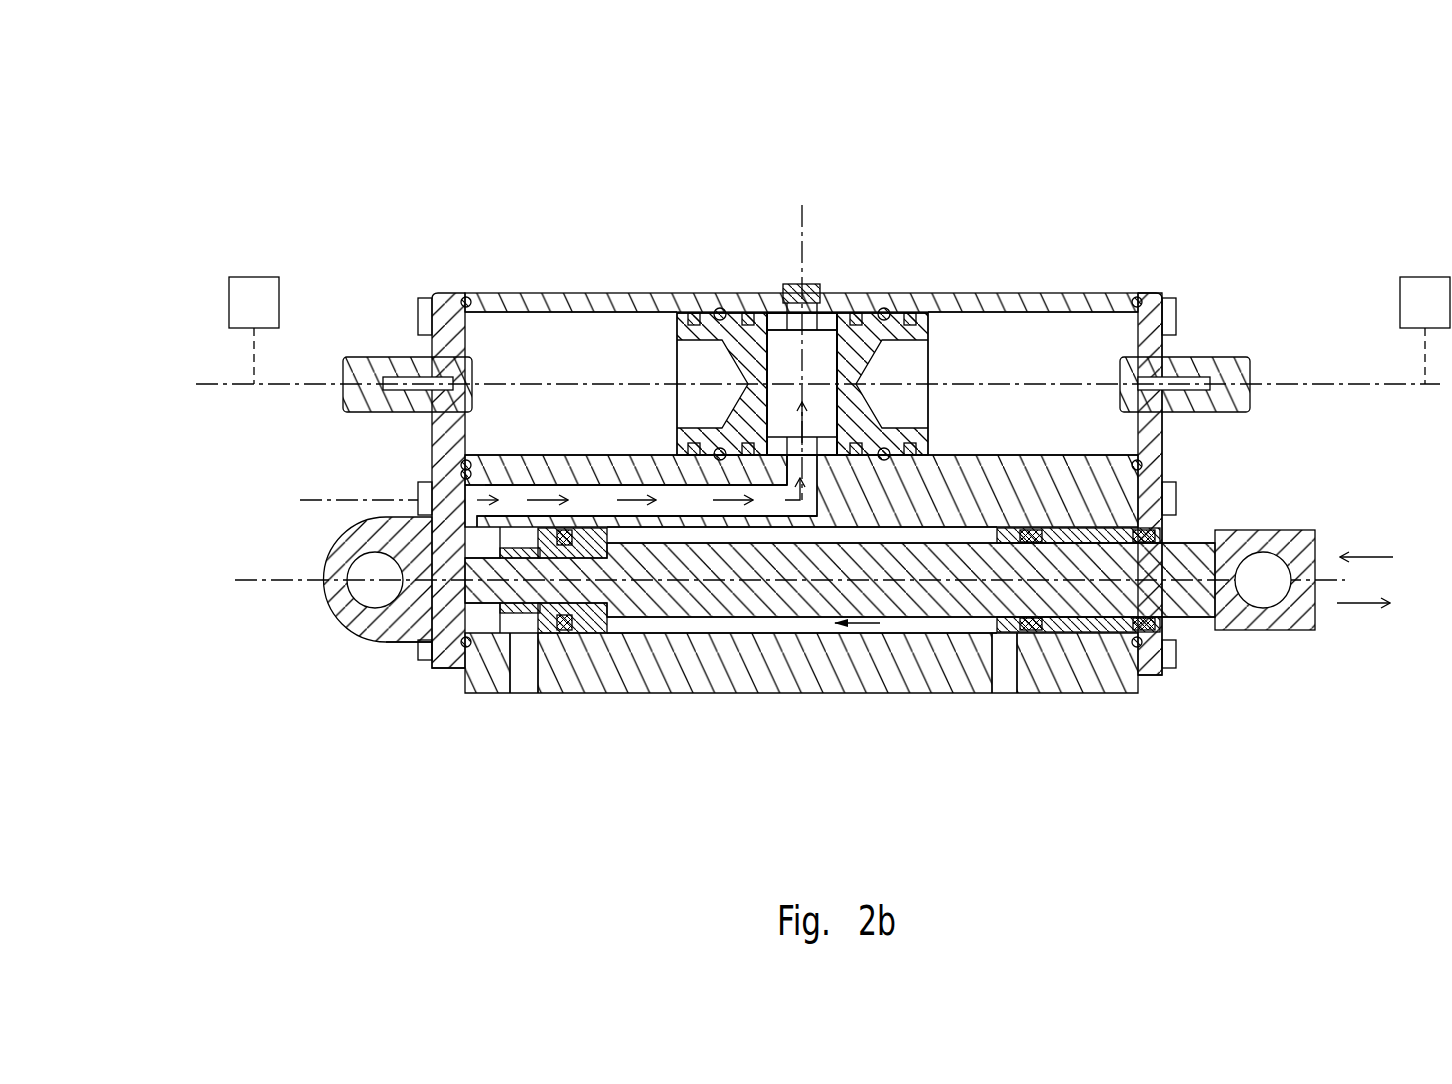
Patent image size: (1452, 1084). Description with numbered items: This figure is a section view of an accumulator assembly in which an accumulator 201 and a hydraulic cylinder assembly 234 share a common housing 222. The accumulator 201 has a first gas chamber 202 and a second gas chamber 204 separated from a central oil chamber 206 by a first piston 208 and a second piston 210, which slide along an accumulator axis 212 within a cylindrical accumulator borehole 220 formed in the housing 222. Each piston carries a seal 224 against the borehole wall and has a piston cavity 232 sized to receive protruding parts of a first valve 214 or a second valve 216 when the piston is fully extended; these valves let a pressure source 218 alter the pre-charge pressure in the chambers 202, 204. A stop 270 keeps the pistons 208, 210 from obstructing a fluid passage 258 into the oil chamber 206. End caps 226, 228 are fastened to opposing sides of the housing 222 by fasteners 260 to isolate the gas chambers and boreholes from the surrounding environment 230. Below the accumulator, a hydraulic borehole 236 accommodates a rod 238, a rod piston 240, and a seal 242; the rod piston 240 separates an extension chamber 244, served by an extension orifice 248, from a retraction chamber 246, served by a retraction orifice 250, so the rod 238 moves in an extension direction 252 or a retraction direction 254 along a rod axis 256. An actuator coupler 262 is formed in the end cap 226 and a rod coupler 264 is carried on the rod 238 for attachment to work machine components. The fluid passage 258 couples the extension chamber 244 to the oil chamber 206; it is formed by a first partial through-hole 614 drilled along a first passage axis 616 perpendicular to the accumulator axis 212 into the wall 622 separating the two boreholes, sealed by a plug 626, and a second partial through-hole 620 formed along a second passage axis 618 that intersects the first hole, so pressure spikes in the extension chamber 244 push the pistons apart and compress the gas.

The accumulator 201 is at (1219, 298).
The first gas chamber 202 is at (595, 362).
The second gas chamber 204 is at (1065, 340).
The oil chamber 206 is at (818, 352).
The first piston 208 is at (718, 312).
The second piston 210 is at (930, 332).
The accumulator axis 212 is at (196, 384).
The first valve 214 is at (355, 357).
The second valve 216 is at (1250, 386).
The pressure source 218 is at (255, 277).
The accumulator borehole 220 is at (503, 352).
The housing 222 is at (648, 680).
The seal 224 is at (884, 312).
The end cap 226 is at (440, 440).
The end cap 228 is at (1161, 333).
The surrounding environment 230 is at (318, 86).
The piston cavity 232 is at (692, 366).
The hydraulic cylinder assembly 234 is at (292, 622).
The hydraulic borehole 236 is at (890, 600).
The rod 238 is at (930, 598).
The rod piston 240 is at (618, 690).
The seal 242 is at (1085, 635).
The extension chamber 244 is at (488, 624).
The retraction chamber 246 is at (780, 626).
The extension orifice 248 is at (525, 700).
The retraction orifice 250 is at (1004, 700).
The extension direction 252 is at (1365, 603).
The retraction direction 254 is at (1368, 557).
The rod axis 256 is at (235, 580).
The fluid passage 258 is at (730, 500).
The fasteners 260 is at (424, 298).
The actuator coupler 262 is at (345, 637).
The rod coupler 264 is at (1268, 631).
The stop 270 is at (783, 302).
The first partial through-hole 614 is at (792, 283).
The first passage axis 616 is at (802, 205).
The second passage axis 618 is at (300, 500).
The second partial through-hole 620 is at (585, 500).
The wall 622 is at (1052, 463).
The plug 626 is at (814, 300).